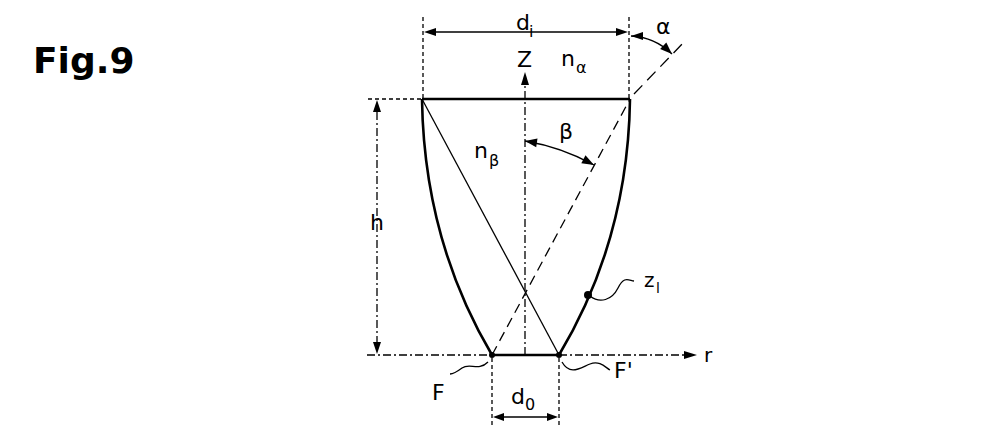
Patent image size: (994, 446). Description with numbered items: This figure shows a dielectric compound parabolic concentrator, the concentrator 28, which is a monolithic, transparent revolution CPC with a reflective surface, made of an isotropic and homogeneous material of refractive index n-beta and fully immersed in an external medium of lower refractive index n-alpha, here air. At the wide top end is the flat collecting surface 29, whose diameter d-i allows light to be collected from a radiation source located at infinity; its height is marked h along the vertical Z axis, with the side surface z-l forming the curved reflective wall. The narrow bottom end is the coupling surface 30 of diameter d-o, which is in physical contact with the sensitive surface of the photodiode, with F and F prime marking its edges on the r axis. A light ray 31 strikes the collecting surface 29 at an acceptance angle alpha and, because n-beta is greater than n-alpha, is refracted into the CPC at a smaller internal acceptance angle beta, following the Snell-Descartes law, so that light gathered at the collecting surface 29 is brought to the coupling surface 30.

The concentrator 28 is at (648, 220).
The collecting surface 29 is at (477, 98).
The coupling surface 30 is at (540, 358).
The light ray 31 is at (651, 74).